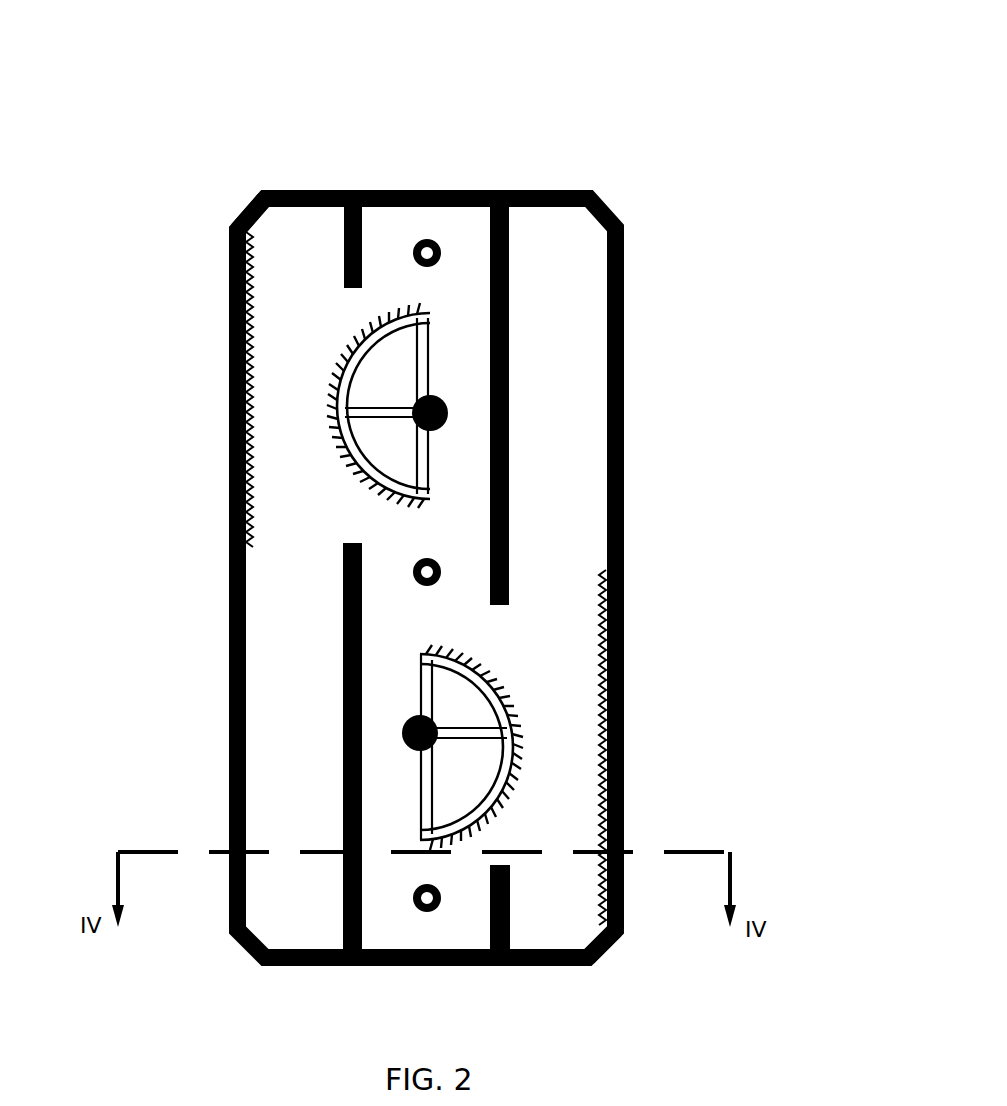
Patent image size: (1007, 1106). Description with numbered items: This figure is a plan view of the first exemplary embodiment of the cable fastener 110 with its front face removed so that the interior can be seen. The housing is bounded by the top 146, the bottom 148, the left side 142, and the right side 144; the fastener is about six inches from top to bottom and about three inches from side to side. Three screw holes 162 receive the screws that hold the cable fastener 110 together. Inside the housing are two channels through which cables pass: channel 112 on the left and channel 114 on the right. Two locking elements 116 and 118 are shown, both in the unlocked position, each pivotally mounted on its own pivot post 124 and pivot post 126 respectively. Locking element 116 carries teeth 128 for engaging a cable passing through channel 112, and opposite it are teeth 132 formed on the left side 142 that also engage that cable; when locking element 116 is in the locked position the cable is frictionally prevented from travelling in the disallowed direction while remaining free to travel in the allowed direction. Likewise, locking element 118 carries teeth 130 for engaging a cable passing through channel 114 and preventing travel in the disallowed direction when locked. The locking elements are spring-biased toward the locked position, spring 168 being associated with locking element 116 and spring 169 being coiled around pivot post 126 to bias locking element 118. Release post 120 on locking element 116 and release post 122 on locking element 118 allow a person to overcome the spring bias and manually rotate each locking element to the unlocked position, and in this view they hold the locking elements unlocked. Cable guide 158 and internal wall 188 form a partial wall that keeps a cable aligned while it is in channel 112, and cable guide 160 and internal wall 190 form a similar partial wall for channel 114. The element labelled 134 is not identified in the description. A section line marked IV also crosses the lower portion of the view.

The cable fastener 110 is at (237, 167).
The channel 112 is at (295, 688).
The channel 114 is at (562, 333).
The locking element 116 is at (430, 358).
The locking element 118 is at (425, 802).
The release post 120 is at (340, 410).
The release post 122 is at (507, 735).
The pivot post 124 is at (440, 400).
The pivot post 126 is at (433, 720).
The teeth 128 is at (335, 420).
The teeth 130 is at (522, 760).
The teeth 132 is at (285, 190).
The lower right corner 134 is at (613, 942).
The left side 142 is at (229, 360).
The right side 144 is at (625, 468).
The top 146 is at (407, 190).
The bottom 148 is at (385, 967).
The cable guide 158 is at (350, 775).
The cable guide 160 is at (510, 430).
The screw holes 162 is at (440, 243).
The spring 168 is at (510, 350).
The spring 169 is at (427, 722).
The internal wall 188 is at (362, 247).
The internal wall 190 is at (512, 930).